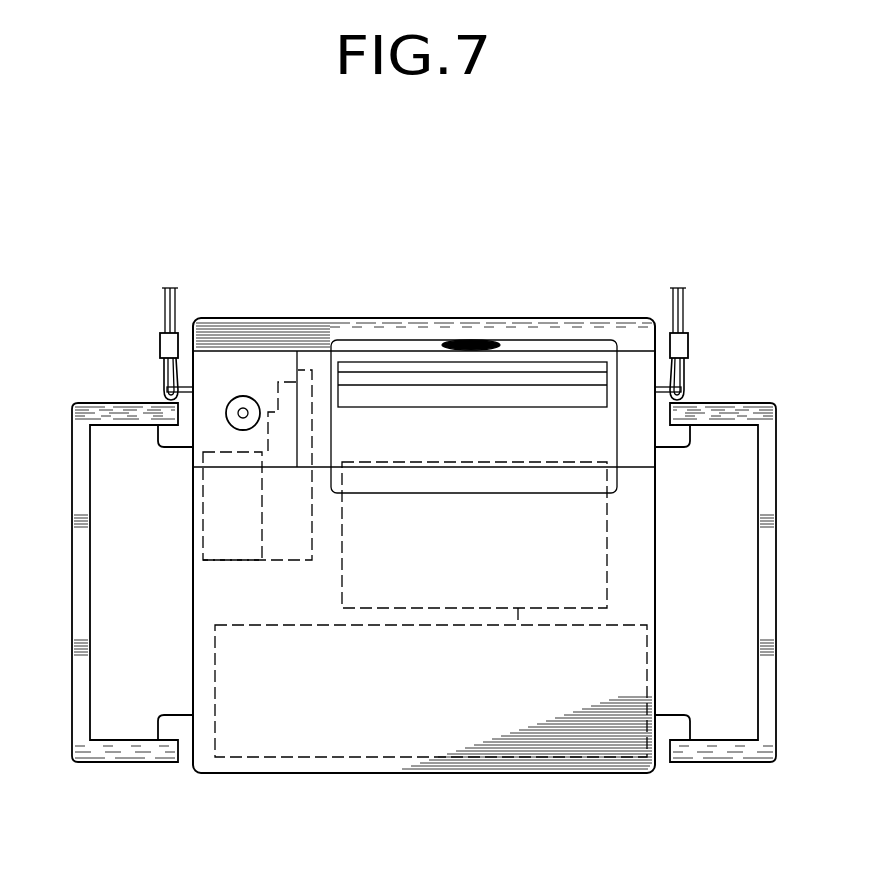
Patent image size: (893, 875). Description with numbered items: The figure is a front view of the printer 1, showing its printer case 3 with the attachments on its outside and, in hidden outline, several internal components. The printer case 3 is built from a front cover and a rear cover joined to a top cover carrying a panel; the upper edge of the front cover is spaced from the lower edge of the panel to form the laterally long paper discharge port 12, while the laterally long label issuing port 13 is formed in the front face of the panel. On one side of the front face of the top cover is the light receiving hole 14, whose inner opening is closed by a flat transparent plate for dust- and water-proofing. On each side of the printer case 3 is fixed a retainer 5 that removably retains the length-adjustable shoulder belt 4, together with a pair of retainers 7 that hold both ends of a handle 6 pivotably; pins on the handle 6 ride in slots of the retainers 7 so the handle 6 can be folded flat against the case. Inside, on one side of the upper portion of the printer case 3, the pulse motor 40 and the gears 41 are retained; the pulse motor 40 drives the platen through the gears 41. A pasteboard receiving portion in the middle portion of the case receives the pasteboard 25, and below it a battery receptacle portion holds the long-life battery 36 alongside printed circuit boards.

The printer 1 is at (316, 300).
The printer case 3 is at (310, 698).
The shoulder belt 4 is at (165, 298).
The retainer 5 is at (188, 383).
The handle 6 is at (80, 548).
The retainer 7 is at (177, 438).
The paper discharge port 12 is at (553, 493).
The label issuing port 13 is at (397, 378).
The light receiving hole 14 is at (243, 413).
The pasteboard 25 is at (518, 610).
The battery 36 is at (432, 757).
The pulse motor 40 is at (218, 568).
The gears 41 is at (273, 563).